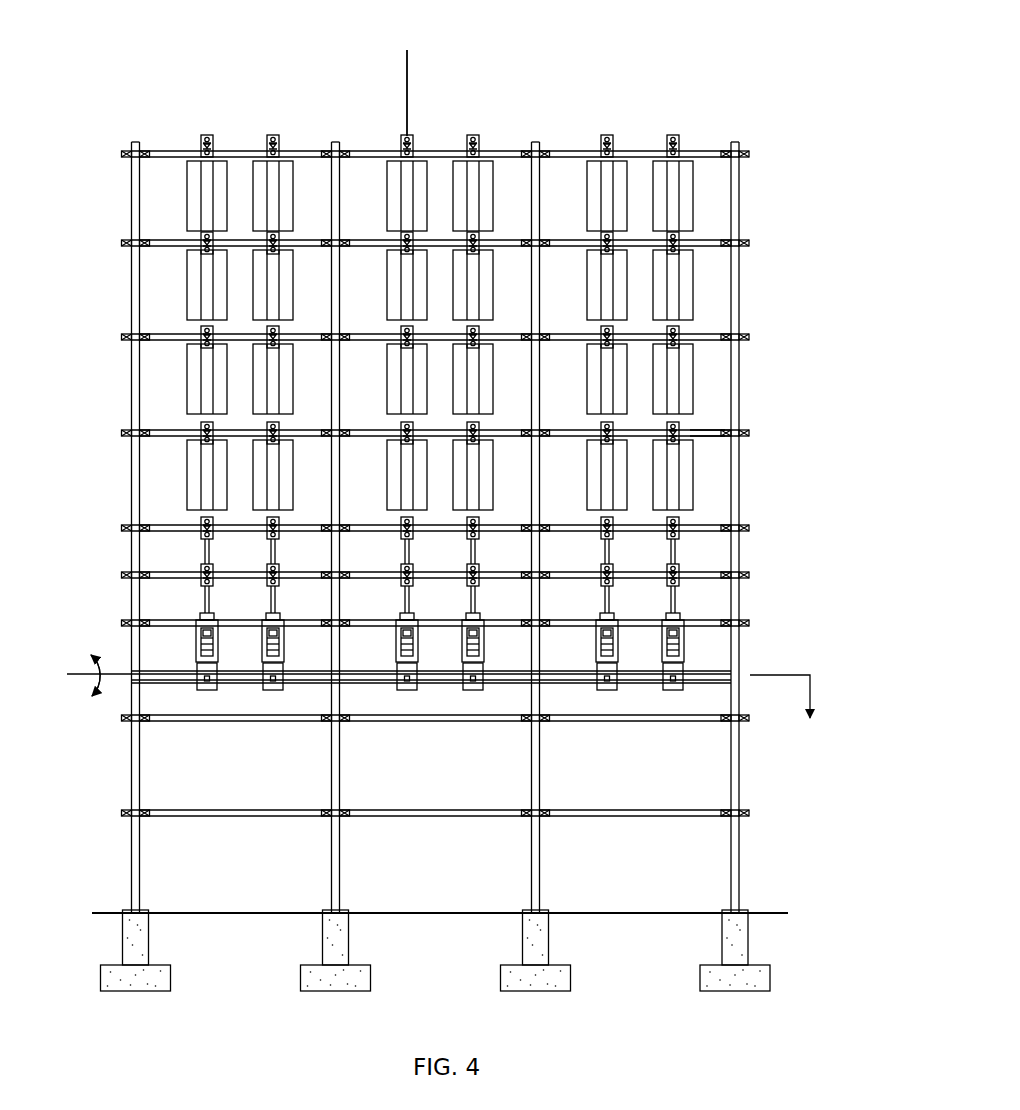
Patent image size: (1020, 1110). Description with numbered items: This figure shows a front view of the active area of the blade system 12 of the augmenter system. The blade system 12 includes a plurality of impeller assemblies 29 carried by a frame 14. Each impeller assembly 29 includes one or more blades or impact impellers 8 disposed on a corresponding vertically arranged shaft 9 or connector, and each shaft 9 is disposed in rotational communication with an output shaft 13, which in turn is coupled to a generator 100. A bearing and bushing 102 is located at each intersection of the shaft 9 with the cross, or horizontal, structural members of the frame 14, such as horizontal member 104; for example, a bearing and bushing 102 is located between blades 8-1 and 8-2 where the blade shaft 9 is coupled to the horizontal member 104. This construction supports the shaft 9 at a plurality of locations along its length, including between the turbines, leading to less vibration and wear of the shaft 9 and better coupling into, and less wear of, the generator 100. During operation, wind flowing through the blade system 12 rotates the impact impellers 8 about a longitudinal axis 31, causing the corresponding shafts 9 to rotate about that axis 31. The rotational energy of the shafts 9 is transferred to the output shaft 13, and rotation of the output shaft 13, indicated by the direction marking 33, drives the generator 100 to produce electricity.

The blade system 12 is at (652, 55).
The impeller assembly 29 is at (263, 114).
The longitudinal axis 31 is at (408, 80).
The frame 14 is at (740, 197).
The impact impeller 8 is at (712, 273).
The blade 8-1 is at (686, 363).
The blade 8-2 is at (686, 480).
The bearing and bushing 102 is at (680, 428).
The horizontal member 104 is at (718, 434).
The shaft 9 is at (676, 553).
The output shaft 13 is at (719, 668).
The rotation direction 33 is at (78, 674).
The generator 100 is at (806, 737).